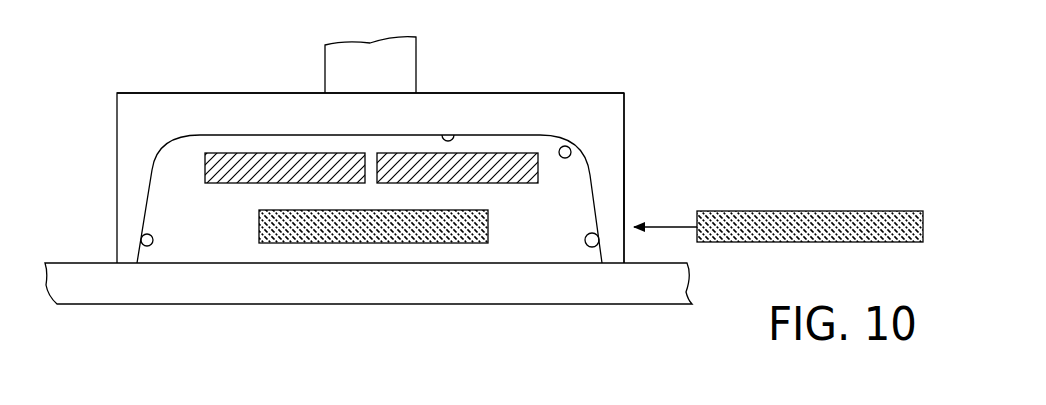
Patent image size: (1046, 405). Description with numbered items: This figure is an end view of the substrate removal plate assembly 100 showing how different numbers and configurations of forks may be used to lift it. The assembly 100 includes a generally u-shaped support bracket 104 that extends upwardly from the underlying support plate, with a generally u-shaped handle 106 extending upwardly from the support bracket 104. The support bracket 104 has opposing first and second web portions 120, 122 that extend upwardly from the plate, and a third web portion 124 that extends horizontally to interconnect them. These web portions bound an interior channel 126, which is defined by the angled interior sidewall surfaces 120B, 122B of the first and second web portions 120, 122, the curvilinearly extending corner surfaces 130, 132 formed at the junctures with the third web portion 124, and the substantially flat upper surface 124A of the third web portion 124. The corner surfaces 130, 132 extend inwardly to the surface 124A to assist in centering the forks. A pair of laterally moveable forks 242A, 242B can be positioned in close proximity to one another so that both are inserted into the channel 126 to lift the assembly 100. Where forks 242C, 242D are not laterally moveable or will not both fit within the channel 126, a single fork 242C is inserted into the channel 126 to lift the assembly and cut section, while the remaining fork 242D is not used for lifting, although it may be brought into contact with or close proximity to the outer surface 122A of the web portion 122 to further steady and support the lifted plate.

The substrate removal plate assembly 100 is at (802, 79).
The support bracket 104 is at (620, 87).
The handle 106 is at (360, 58).
The first web portion 120 is at (122, 218).
The angled interior sidewall surface 120B is at (140, 245).
The second web portion 122 is at (608, 160).
The outer surface of the web portion 122A is at (626, 202).
The angled interior sidewall surface 122B is at (598, 247).
The third web portion 124 is at (307, 112).
The underlying surface of the third web portion 124A is at (460, 135).
The interior channel 126 is at (183, 202).
The curvilinearly extending corner surface 130 is at (183, 153).
The curvilinearly extending corner surface 132 is at (558, 150).
The fork 242A is at (277, 153).
The fork 242B is at (490, 153).
The fork 242C is at (259, 227).
The fork 242D is at (856, 213).